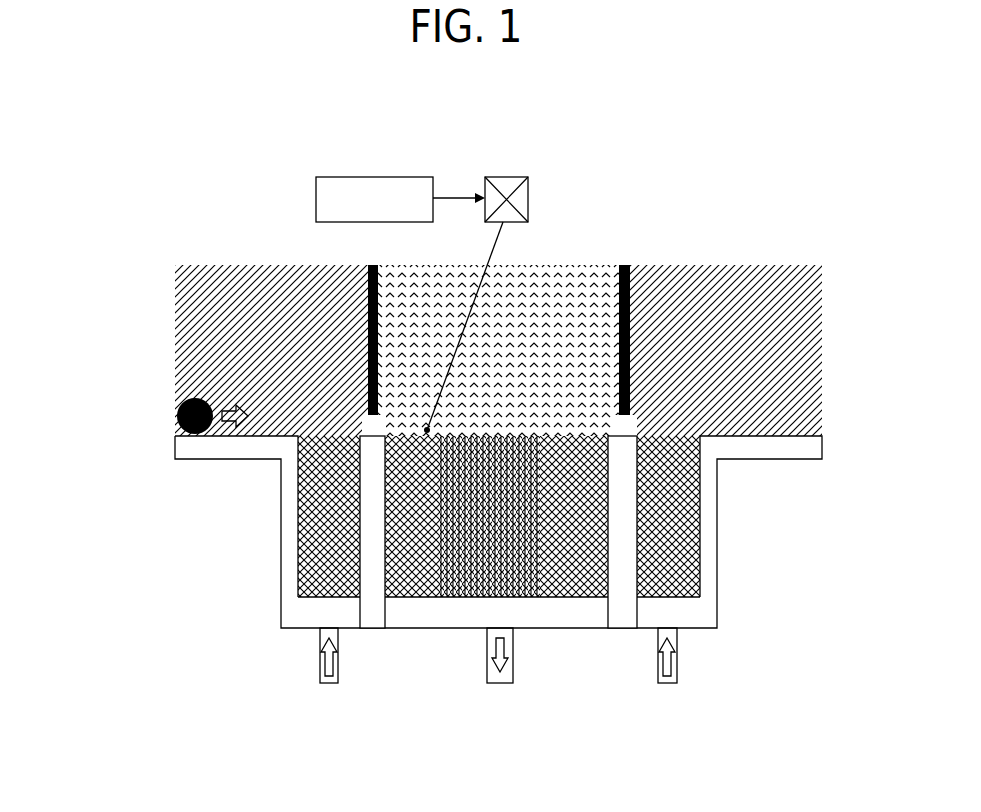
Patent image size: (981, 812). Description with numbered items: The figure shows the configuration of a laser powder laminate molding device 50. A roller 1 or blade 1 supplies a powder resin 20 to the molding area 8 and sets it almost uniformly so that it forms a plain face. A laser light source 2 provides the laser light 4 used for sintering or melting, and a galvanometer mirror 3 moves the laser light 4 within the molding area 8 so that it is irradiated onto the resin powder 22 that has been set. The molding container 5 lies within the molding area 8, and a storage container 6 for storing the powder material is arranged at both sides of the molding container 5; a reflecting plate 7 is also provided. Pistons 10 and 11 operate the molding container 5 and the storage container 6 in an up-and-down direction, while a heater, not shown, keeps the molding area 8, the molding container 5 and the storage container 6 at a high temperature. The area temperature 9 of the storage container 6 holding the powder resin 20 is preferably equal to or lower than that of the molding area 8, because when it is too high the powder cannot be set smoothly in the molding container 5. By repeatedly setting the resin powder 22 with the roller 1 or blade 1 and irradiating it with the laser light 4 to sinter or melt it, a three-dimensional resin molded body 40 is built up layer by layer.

The laser powder laminate molding device 50 is at (148, 260).
The roller or blade 1 is at (178, 400).
The laser light source 2 is at (316, 190).
The galvanometer mirror 3 is at (528, 177).
The laser light 4 is at (485, 287).
The molding container 5 is at (610, 520).
The storage container 6 is at (298, 515).
The reflecting plate 7 is at (366, 322).
The molding area 8 is at (595, 322).
The area temperature 9 is at (812, 332).
The piston 10 is at (510, 683).
The piston 11 is at (320, 681).
The powder resin 20 is at (333, 560).
The resin powder 22 is at (408, 532).
The resin molded body 40 is at (472, 585).